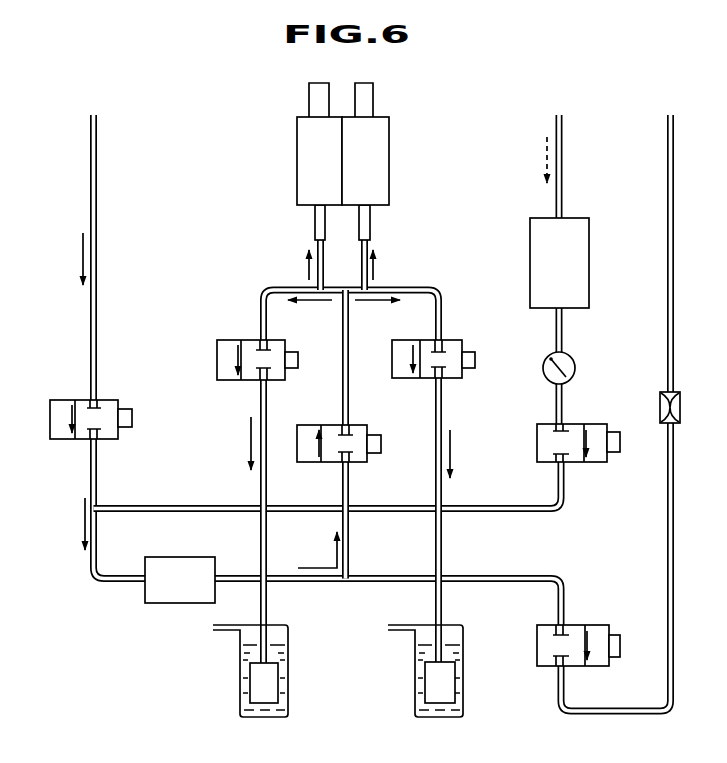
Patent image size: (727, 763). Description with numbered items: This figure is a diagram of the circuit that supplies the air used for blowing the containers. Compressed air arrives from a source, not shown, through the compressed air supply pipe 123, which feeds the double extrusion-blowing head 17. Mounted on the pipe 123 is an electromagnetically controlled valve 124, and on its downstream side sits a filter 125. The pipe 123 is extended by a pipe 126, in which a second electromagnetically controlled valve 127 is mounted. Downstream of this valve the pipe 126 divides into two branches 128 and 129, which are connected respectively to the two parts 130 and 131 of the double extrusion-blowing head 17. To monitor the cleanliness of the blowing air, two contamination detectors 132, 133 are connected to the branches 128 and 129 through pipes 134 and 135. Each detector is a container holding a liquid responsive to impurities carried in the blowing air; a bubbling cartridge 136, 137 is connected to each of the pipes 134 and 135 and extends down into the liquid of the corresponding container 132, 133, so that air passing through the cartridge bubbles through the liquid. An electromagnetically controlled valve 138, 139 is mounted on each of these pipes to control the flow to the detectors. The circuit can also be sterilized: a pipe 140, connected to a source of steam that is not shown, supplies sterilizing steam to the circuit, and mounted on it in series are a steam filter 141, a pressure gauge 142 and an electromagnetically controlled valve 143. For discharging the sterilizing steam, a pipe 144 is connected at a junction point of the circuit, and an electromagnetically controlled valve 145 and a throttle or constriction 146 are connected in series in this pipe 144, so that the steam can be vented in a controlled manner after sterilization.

The double extrusion-blowing head 17 is at (393, 114).
The compressed air supply pipe 123 is at (97, 236).
The electromagnetically controlled valve 124 is at (60, 400).
The filter 125 is at (195, 557).
The pipe 126 is at (350, 481).
The second electromagnetically controlled valve 127 is at (356, 425).
The branch 128 is at (316, 246).
The branch 129 is at (371, 245).
The part of the double extrusion-blowing head 130 is at (312, 155).
The part of the double extrusion-blowing head 131 is at (373, 155).
The contamination detector 132 is at (282, 705).
The contamination detector 133 is at (460, 708).
The pipe 134 is at (258, 480).
The pipe 135 is at (435, 552).
The bubbling cartridge 136 is at (264, 675).
The bubbling cartridge 137 is at (443, 673).
The electromagnetically controlled valve 138 is at (232, 340).
The electromagnetically controlled valve 139 is at (451, 340).
The sterilizing steam supply pipe 140 is at (540, 505).
The steam filter 141 is at (589, 245).
The pressure gauge 142 is at (573, 360).
The electromagnetically controlled valve 143 is at (588, 424).
The steam discharge pipe 144 is at (516, 575).
The electromagnetically controlled valve 145 is at (596, 625).
The throttle or constriction 146 is at (660, 400).